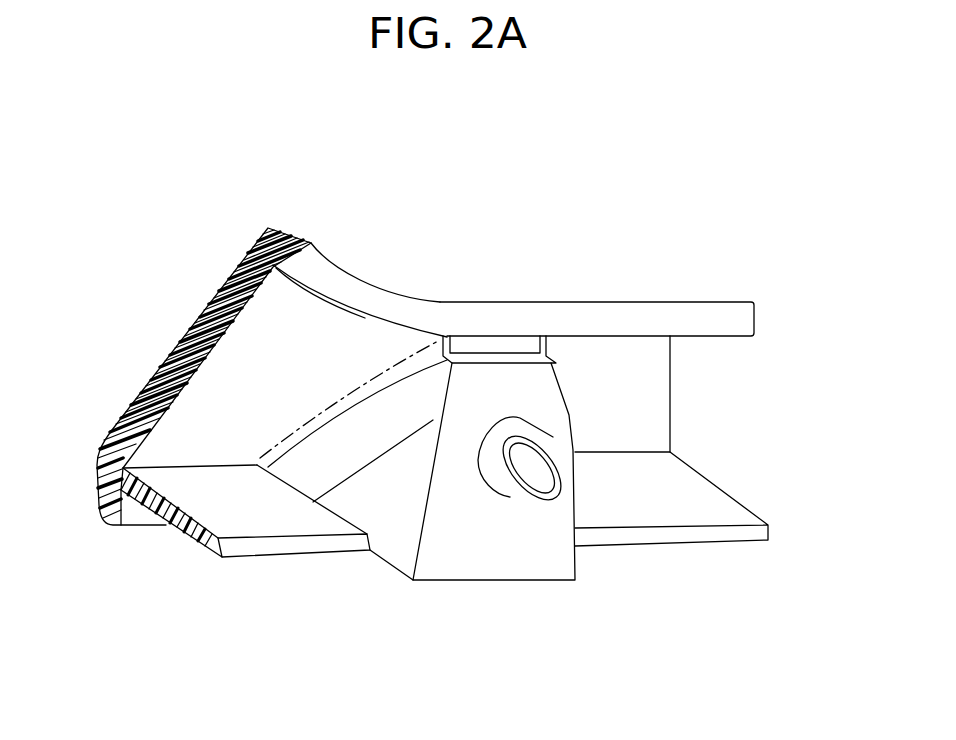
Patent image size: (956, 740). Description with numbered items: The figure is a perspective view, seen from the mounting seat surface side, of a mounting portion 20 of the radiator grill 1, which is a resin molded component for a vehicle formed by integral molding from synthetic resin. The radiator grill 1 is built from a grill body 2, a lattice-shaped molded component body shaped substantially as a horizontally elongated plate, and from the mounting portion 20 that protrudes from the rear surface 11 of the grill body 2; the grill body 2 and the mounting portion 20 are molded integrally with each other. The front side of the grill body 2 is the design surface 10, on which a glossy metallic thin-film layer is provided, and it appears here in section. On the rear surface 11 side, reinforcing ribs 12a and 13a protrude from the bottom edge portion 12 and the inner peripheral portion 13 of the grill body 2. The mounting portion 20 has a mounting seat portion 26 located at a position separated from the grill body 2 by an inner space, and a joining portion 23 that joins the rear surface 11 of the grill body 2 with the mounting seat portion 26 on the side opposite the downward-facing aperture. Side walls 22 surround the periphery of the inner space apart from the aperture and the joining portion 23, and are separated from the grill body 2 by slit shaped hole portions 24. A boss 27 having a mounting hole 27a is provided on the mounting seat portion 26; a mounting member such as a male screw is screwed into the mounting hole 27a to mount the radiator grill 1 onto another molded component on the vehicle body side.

The radiator grill 1 is at (721, 201).
The grill body 2 is at (597, 300).
The design surface 10 is at (213, 297).
The rear surface 11 is at (199, 433).
The bottom edge portion 12 is at (139, 524).
The reinforcing rib 12a is at (322, 547).
The inner peripheral portion 13 is at (285, 233).
The reinforcing rib 13a is at (333, 272).
The mounting portion 20 is at (578, 390).
The side wall 22 is at (405, 490).
The joining portion 23 is at (492, 345).
The slit shaped hole portion 24 is at (393, 370).
The mounting seat portion 26 is at (500, 558).
The boss 27 is at (540, 500).
The mounting hole 27a is at (545, 470).